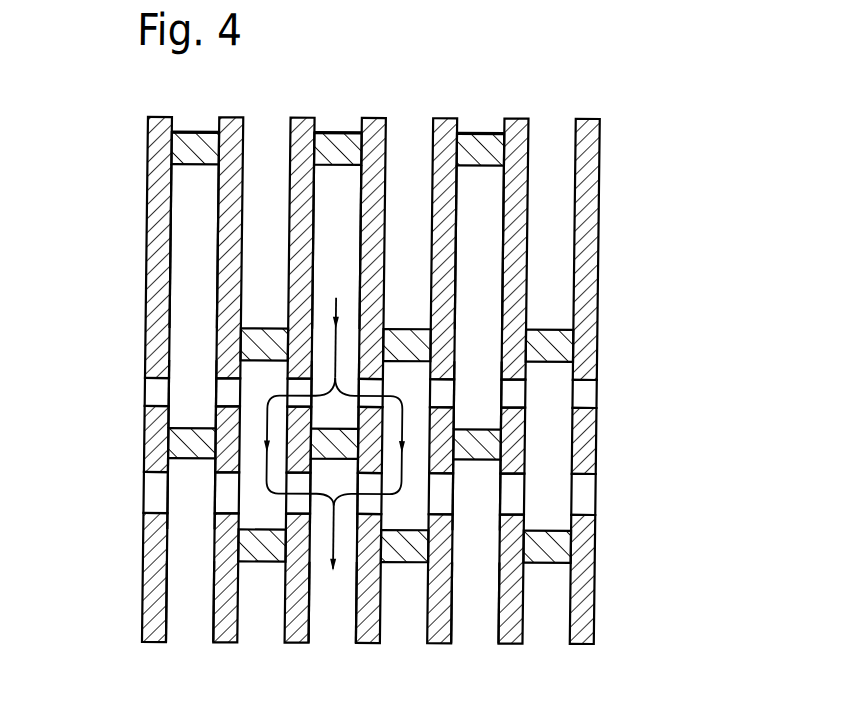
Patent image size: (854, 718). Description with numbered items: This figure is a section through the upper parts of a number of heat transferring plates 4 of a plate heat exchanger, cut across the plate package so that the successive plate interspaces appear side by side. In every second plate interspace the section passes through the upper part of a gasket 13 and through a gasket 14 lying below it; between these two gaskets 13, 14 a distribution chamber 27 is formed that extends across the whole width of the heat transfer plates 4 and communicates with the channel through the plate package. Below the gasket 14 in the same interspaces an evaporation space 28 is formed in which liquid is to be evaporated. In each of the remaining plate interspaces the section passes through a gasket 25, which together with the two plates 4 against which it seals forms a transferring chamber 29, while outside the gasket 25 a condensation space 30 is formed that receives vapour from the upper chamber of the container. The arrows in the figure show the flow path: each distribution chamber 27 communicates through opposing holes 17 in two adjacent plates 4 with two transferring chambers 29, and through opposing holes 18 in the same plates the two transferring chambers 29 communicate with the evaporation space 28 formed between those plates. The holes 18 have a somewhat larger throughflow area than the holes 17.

The heat transfer plate 4 is at (150, 179).
The gasket 13 is at (150, 137).
The gasket 14 is at (195, 440).
The hole 17 is at (161, 390).
The hole 18 is at (158, 493).
The gasket 25 is at (552, 344).
The distribution chamber 27 is at (333, 226).
The evaporation space 28 is at (329, 590).
The transferring chamber 29 is at (264, 371).
The condensation space 30 is at (264, 632).